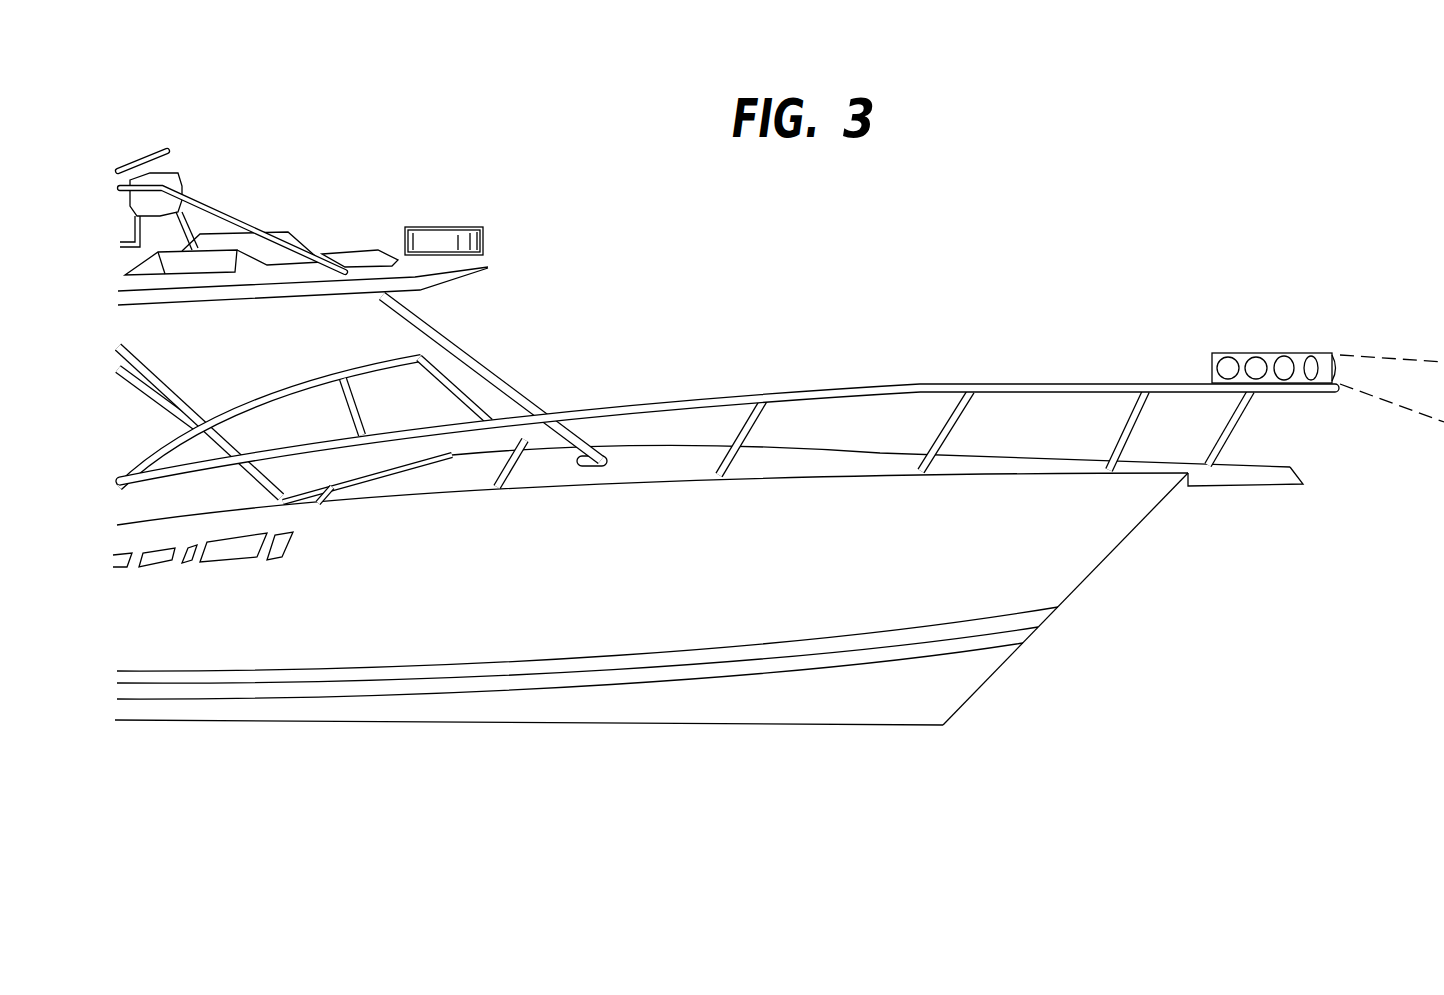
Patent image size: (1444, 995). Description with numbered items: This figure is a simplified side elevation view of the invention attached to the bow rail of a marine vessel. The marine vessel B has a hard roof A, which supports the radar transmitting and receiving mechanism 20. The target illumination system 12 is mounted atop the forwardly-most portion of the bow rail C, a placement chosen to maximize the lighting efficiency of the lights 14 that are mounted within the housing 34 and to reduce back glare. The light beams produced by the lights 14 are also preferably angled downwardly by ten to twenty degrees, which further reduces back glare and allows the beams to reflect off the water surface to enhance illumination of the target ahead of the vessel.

The hard roof A is at (355, 250).
The marine vessel B is at (580, 316).
The bow rail C is at (917, 383).
The target illumination system 12 is at (1317, 337).
The lights 14 is at (1230, 368).
The radar transmitting and receiving mechanism 20 is at (455, 227).
The housing 34 is at (1298, 351).